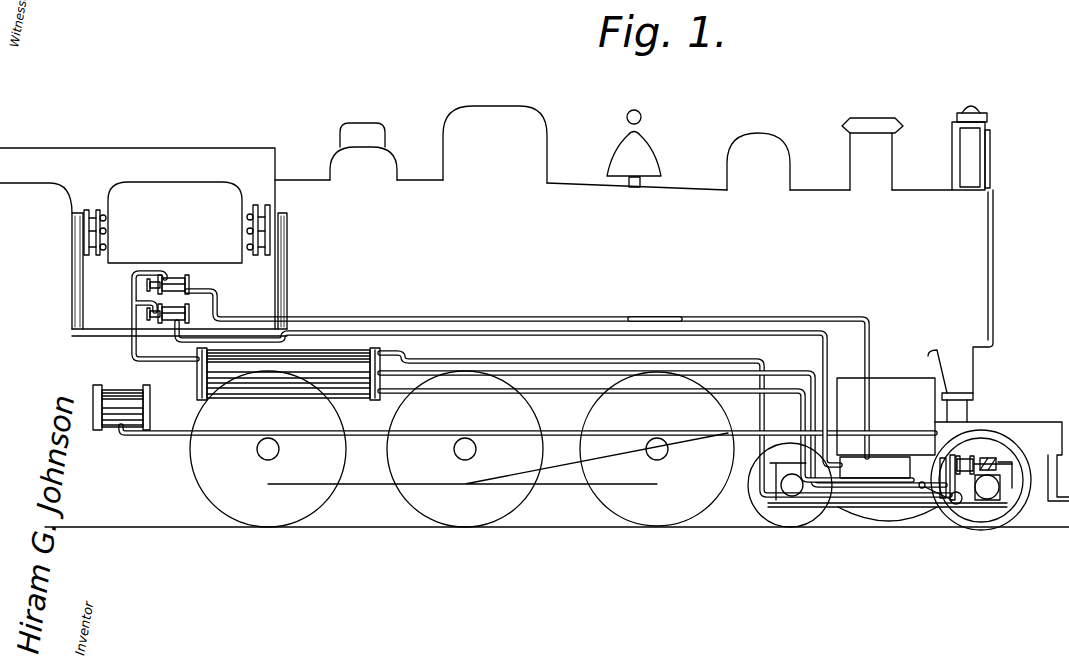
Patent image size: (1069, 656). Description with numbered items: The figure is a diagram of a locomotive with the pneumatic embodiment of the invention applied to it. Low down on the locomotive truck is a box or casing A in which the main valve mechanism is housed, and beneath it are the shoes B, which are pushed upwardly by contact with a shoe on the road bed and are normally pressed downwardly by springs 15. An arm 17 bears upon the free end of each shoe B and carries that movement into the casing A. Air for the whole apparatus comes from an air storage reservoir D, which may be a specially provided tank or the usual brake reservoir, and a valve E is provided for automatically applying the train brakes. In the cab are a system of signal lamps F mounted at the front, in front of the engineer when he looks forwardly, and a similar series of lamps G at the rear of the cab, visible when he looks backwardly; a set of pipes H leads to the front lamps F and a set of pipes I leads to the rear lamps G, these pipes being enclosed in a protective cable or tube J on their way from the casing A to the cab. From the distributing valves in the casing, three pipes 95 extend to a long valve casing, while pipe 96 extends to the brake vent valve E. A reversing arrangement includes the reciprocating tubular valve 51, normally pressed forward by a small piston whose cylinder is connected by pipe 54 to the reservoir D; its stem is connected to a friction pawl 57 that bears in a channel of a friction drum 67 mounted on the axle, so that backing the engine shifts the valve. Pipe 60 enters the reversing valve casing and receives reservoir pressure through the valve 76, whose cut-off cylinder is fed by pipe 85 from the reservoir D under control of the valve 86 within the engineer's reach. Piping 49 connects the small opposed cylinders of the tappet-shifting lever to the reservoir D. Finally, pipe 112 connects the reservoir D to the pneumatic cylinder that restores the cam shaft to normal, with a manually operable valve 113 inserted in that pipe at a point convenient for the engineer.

The manually operable valve 113 is at (180, 275).
The pipes 95 is at (306, 271).
The pipe 112 is at (652, 318).
The pipe 85 is at (168, 362).
The valve 86 is at (162, 323).
The piping 49 is at (576, 376).
The pipe 54 is at (752, 393).
The pipe 96 is at (422, 436).
The pipe 60 is at (942, 462).
The reciprocating tubular valve 51 is at (962, 457).
The arm 17 is at (928, 477).
The friction pawl 57 is at (990, 463).
The friction disk or drum 67 is at (1000, 490).
The springs 15 is at (858, 508).
The valve 76 is at (960, 504).
The rear lamps G is at (106, 222).
The front signal lamps F is at (248, 218).
The set of pipes I is at (82, 292).
The set of pipes H is at (290, 292).
The cable or tube J is at (366, 320).
The air storage reservoir D is at (306, 390).
The valve E is at (107, 408).
The box or casing A is at (875, 467).
The shoes B is at (898, 522).